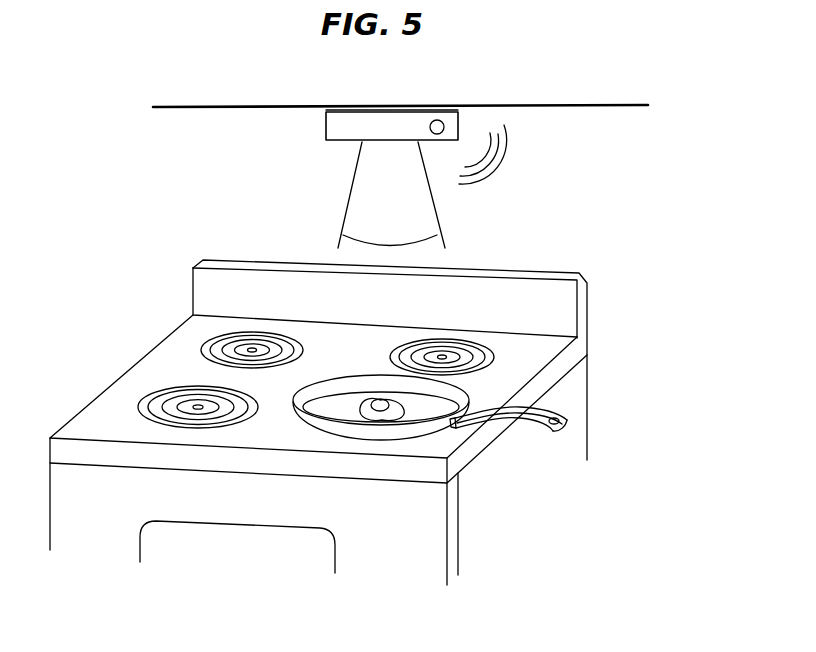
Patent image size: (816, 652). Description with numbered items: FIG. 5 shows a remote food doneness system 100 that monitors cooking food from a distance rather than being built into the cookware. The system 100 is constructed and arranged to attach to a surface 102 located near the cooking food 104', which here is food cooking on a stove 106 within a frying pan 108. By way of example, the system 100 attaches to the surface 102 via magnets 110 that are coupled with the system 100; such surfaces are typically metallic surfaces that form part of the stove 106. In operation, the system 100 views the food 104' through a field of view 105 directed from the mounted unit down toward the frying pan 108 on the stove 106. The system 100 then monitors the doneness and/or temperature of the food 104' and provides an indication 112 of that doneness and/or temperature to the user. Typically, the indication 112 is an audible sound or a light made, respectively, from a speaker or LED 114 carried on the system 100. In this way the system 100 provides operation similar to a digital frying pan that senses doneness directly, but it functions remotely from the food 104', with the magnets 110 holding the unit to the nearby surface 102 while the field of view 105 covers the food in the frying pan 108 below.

The remote food doneness system 100 is at (303, 135).
The surface 102 is at (607, 106).
The food 104' is at (359, 376).
The field of view 105 is at (343, 195).
The stove 106 is at (522, 352).
The frying pan 108 is at (372, 437).
The magnets 110 is at (352, 110).
The indication 112 is at (518, 155).
The speaker or LED 114 is at (440, 121).